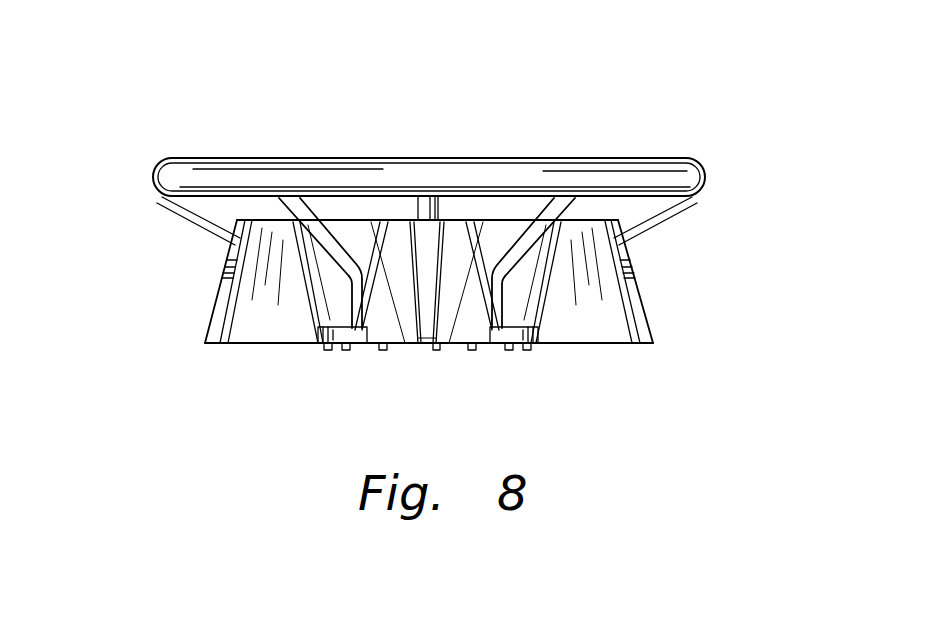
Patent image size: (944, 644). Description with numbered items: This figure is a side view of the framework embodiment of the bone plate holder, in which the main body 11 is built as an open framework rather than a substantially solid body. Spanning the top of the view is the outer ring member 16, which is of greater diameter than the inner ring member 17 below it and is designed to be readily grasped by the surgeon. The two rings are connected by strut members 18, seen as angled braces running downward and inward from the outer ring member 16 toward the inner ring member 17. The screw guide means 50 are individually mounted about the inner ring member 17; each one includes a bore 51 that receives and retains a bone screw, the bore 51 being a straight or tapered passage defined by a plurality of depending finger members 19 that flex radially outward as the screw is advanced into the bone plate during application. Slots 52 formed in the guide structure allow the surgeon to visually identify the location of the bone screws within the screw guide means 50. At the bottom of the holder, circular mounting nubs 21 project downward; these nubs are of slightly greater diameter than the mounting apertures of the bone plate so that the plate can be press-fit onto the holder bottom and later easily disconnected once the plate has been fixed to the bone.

The main body 11 is at (710, 258).
The outer ring member 16 is at (692, 160).
The inner ring member 17 is at (325, 333).
The strut members 18 is at (656, 207).
The depending finger members 19 is at (440, 345).
The mounting nubs 21 is at (510, 350).
The screw guide means 50 is at (202, 383).
The bore 51 is at (436, 242).
The slots 52 is at (400, 330).